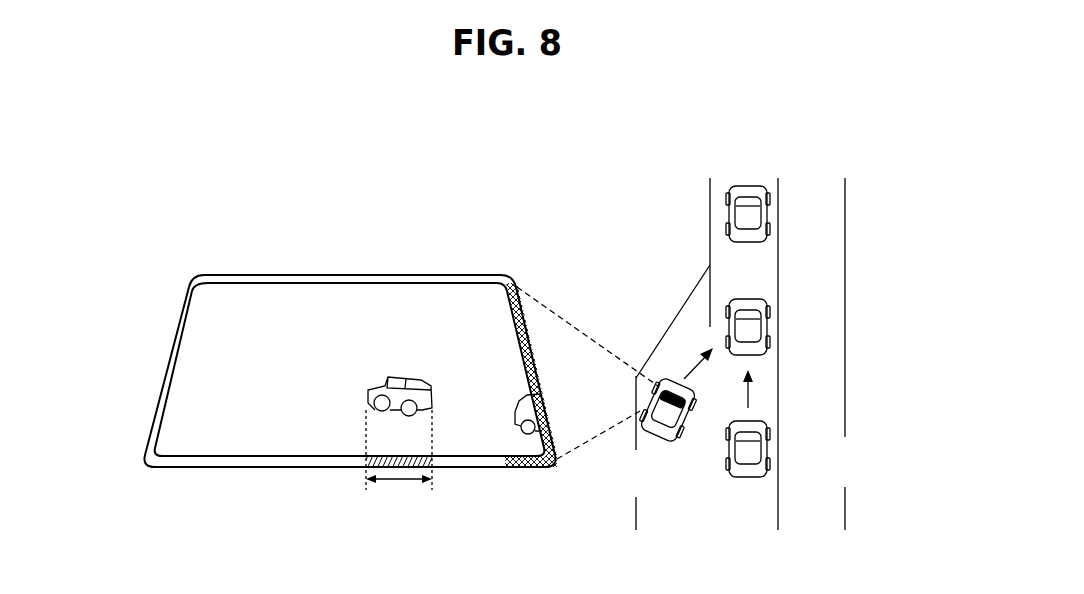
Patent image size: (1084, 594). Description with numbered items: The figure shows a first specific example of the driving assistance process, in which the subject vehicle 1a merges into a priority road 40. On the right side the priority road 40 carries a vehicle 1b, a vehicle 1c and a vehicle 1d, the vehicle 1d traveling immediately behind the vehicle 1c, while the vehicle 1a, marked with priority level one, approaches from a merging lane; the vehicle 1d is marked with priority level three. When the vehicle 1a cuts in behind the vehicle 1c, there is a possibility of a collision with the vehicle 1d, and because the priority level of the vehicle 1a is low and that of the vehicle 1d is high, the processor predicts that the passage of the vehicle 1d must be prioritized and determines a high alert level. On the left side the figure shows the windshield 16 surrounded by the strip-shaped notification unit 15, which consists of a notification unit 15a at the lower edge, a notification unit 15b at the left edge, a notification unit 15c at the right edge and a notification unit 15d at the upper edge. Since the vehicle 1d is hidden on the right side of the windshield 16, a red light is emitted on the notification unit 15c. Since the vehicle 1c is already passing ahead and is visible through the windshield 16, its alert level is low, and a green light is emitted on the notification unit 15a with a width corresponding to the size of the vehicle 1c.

The notification unit 15 is at (375, 360).
The notification unit at the lower edge of the windshield 15a is at (282, 467).
The notification unit at the left edge of the windshield 15b is at (165, 368).
The notification unit at the right edge of the windshield 15c is at (540, 368).
The notification unit at the upper edge of the windshield 15d is at (253, 281).
The windshield 16 is at (330, 313).
The vehicle 1a is at (660, 381).
The vehicle 1b is at (768, 216).
The vehicle 1c is at (432, 384).
The vehicle 1d is at (542, 406).
The priority road 40 is at (760, 157).